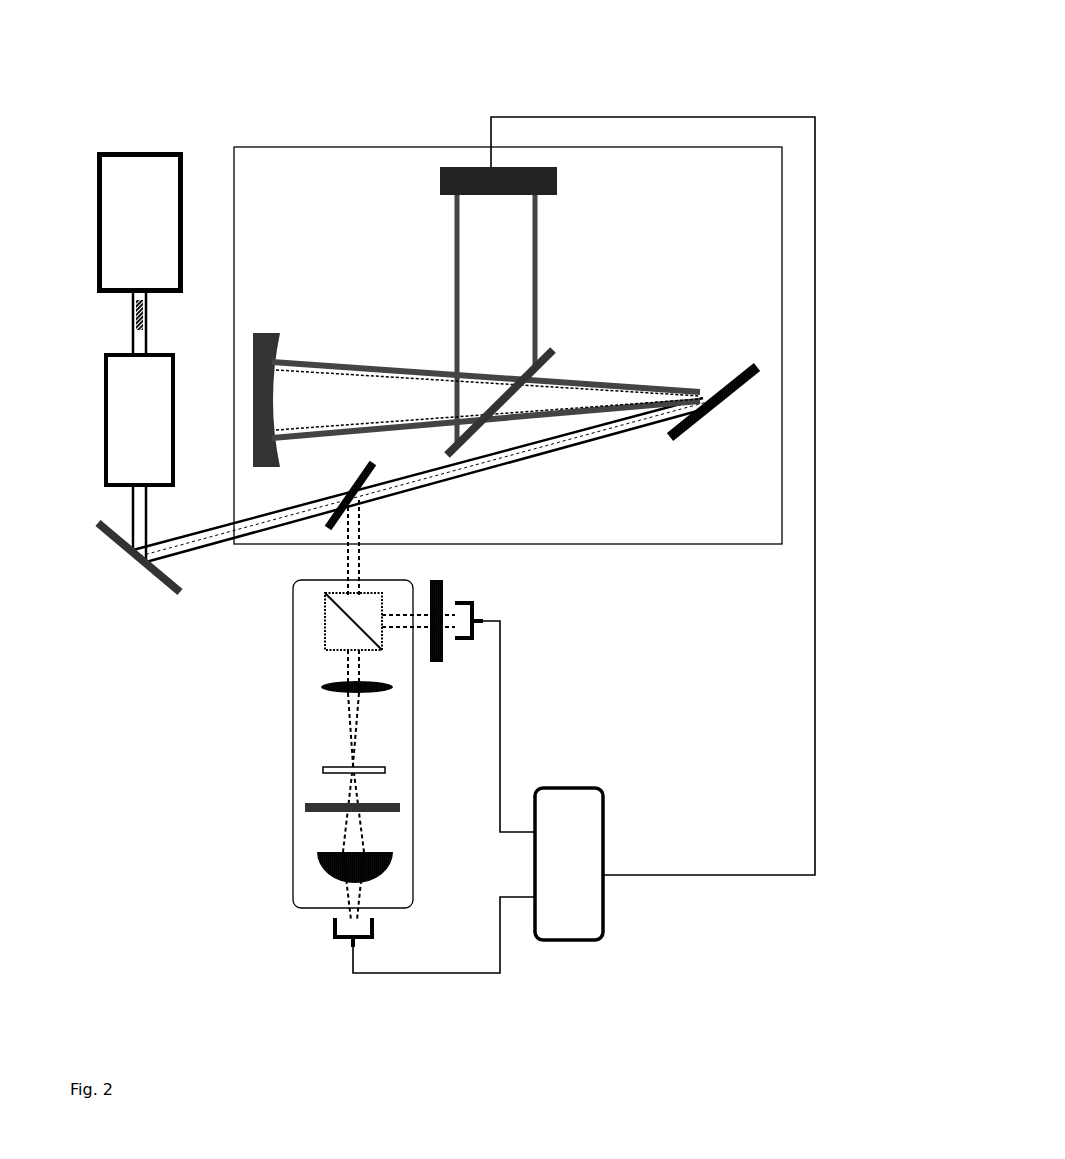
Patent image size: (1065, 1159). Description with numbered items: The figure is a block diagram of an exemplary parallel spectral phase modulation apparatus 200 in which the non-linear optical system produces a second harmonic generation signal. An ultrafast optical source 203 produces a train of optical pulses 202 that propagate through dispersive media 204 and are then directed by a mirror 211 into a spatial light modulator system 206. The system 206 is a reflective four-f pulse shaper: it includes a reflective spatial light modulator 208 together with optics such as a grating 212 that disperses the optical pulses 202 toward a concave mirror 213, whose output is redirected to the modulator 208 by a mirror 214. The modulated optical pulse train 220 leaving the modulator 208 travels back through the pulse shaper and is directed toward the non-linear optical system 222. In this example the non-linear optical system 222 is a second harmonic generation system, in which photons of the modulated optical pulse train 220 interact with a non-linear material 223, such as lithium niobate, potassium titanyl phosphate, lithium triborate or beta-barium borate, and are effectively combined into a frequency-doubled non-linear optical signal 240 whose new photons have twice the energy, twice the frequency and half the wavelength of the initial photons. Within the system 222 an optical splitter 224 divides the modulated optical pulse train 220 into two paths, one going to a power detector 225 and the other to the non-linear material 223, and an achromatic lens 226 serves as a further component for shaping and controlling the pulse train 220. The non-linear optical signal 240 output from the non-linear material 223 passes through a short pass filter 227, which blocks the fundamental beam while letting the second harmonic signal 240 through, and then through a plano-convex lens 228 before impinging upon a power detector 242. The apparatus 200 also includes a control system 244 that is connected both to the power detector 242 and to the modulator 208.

The parallel spectral phase modulation apparatus 200 is at (697, 21).
The train of optical pulses 202 is at (130, 500).
The ultrafast optical source 203 is at (97, 250).
The dispersive media 204 is at (104, 395).
The spatial light modulator system 206 is at (302, 147).
The reflective spatial light modulator 208 is at (557, 185).
The mirror 211 is at (100, 533).
The grating 212 is at (705, 413).
The concave mirror 213 is at (270, 333).
The mirror 214 is at (550, 356).
The modulated optical pulse train 220 is at (343, 562).
The non-linear optical system 222 is at (293, 660).
The non-linear material 223 is at (323, 770).
The optical splitter 224 is at (325, 605).
The power detector 225 is at (467, 600).
The achromatic lens 226 is at (322, 687).
The short pass filter 227 is at (305, 808).
The plano-convex lens 228 is at (318, 855).
The non-linear optical signal 240 is at (340, 838).
The power detector 242 is at (335, 925).
The control system 244 is at (600, 790).